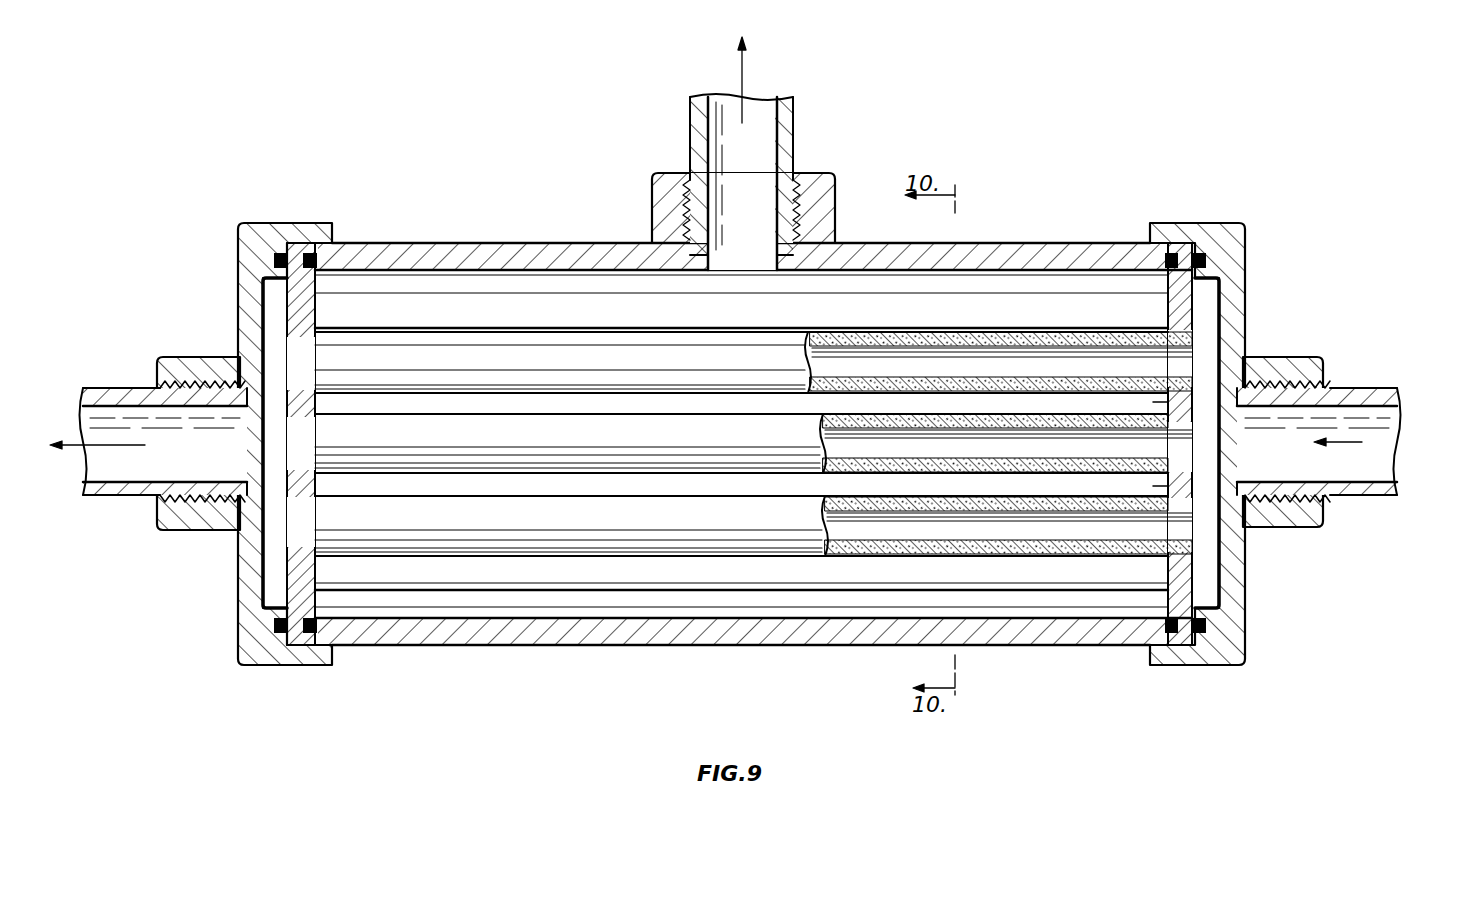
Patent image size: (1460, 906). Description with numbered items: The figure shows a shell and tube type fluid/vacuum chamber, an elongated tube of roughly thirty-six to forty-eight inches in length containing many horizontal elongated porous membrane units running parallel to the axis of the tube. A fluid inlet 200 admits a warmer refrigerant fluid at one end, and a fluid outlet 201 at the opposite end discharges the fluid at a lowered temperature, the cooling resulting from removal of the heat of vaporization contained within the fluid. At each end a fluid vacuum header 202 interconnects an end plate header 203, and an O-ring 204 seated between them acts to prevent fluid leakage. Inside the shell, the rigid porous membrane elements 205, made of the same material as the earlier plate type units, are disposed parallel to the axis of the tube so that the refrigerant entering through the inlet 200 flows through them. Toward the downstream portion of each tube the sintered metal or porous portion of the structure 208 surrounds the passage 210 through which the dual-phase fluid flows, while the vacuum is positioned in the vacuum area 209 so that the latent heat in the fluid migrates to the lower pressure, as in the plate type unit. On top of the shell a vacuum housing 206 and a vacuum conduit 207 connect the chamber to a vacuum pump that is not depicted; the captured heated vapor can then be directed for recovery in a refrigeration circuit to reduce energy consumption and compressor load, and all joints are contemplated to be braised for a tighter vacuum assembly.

The fluid inlet 200 is at (1355, 409).
The fluid outlet 201 is at (103, 418).
The fluid vacuum header 202 is at (213, 363).
The end plate header 203 is at (292, 251).
The O-ring 204 is at (318, 252).
The rigid porous membrane elements 205 is at (745, 327).
The vacuum housing 206 is at (833, 187).
The vacuum conduit 207 is at (795, 112).
The porous membrane element 208 is at (965, 331).
The vacuum area 209 is at (807, 345).
The fluid passage 210 is at (1078, 358).